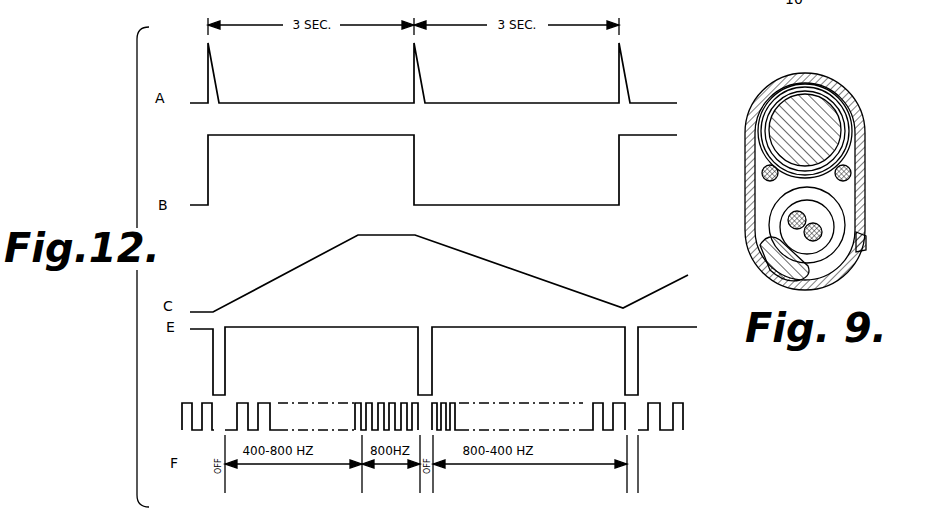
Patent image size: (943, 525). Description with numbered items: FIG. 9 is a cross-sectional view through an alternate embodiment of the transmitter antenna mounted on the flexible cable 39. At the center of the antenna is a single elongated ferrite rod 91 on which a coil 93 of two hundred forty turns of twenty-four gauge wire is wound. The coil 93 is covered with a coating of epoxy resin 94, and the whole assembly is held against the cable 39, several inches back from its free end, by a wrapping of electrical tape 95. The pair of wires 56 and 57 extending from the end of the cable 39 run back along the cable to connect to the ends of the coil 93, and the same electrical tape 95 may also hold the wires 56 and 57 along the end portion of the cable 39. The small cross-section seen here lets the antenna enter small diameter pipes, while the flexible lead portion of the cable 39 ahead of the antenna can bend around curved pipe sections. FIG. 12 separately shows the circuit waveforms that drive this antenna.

The electrical tape 95 is at (793, 84).
The ferrite rod 91 is at (808, 118).
The coil 93 is at (835, 94).
The epoxy resin coating 94 is at (850, 140).
The wire 56 is at (820, 231).
The wire 57 is at (790, 222).
The cable 39 is at (834, 253).